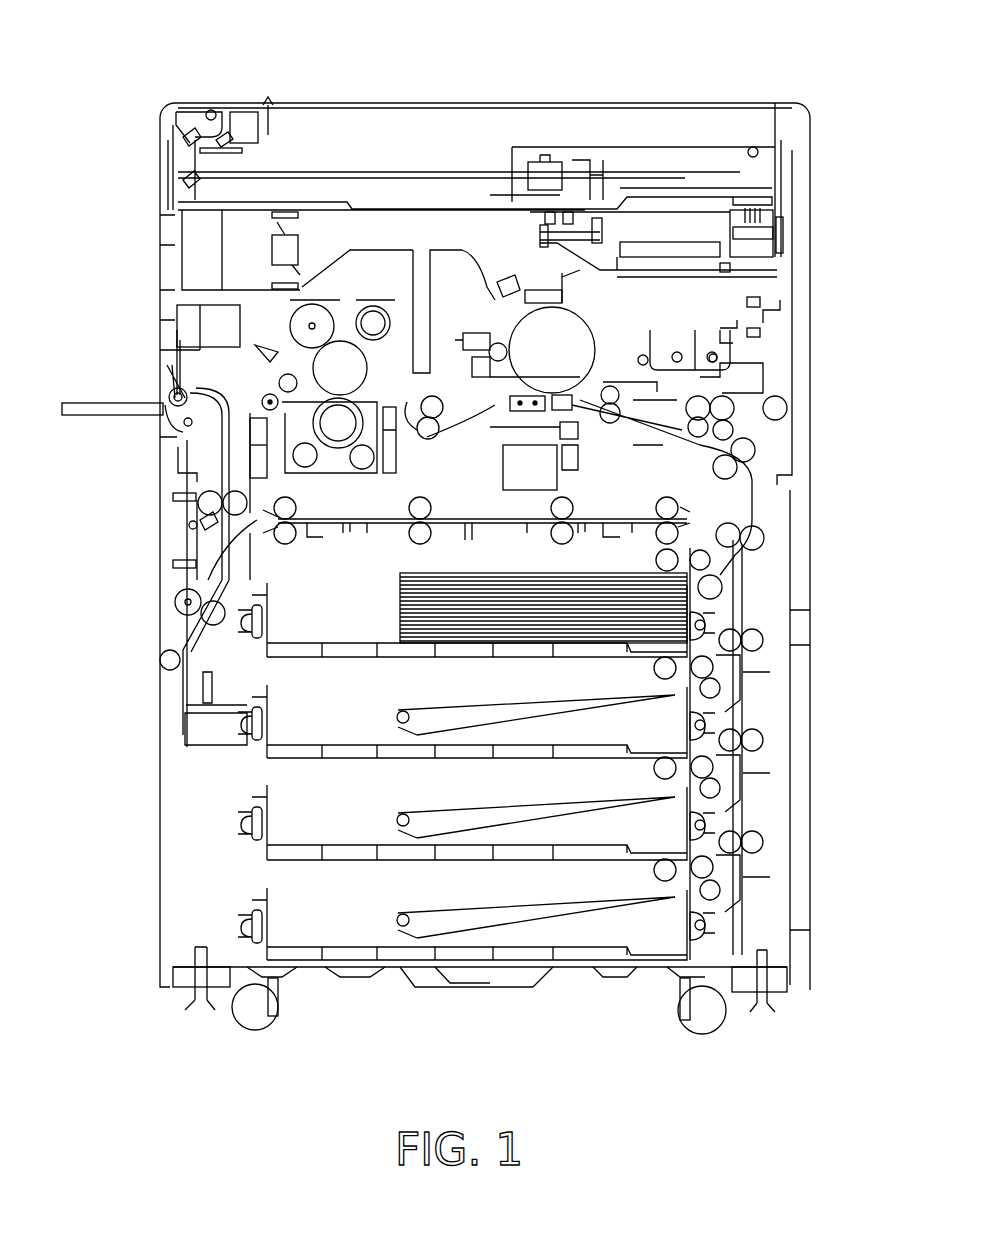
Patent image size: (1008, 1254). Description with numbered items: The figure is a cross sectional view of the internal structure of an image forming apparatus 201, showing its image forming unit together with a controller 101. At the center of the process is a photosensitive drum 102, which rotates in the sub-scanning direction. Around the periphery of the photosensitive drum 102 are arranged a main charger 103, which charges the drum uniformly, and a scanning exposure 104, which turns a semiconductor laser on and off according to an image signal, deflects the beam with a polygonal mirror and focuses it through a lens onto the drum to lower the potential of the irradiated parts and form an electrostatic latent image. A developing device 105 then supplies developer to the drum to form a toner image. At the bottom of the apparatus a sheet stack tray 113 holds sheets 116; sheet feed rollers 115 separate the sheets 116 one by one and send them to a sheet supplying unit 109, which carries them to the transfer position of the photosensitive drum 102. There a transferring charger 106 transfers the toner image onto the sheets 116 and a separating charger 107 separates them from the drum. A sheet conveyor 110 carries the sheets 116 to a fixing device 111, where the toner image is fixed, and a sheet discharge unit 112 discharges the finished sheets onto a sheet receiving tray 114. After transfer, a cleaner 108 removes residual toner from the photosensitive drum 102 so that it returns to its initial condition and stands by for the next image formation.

The image forming apparatus 201 is at (160, 161).
The controller 101 is at (713, 168).
The photosensitive drum 102 is at (534, 365).
The main charger 103 is at (600, 286).
The scanning exposure 104 is at (633, 238).
The developing device 105 is at (637, 320).
The transferring charger 106 is at (590, 372).
The separating charger 107 is at (625, 415).
The cleaner 108 is at (490, 292).
The sheet supplying unit 109 is at (740, 507).
The sheet conveyor 110 is at (490, 420).
The fixing device 111 is at (343, 360).
The sheet discharge unit 112 is at (172, 418).
The sheet stack tray 113 is at (323, 602).
The sheet receiving tray 114 is at (95, 402).
The sheet feed rollers 115 is at (765, 565).
The sheets 116 is at (417, 625).